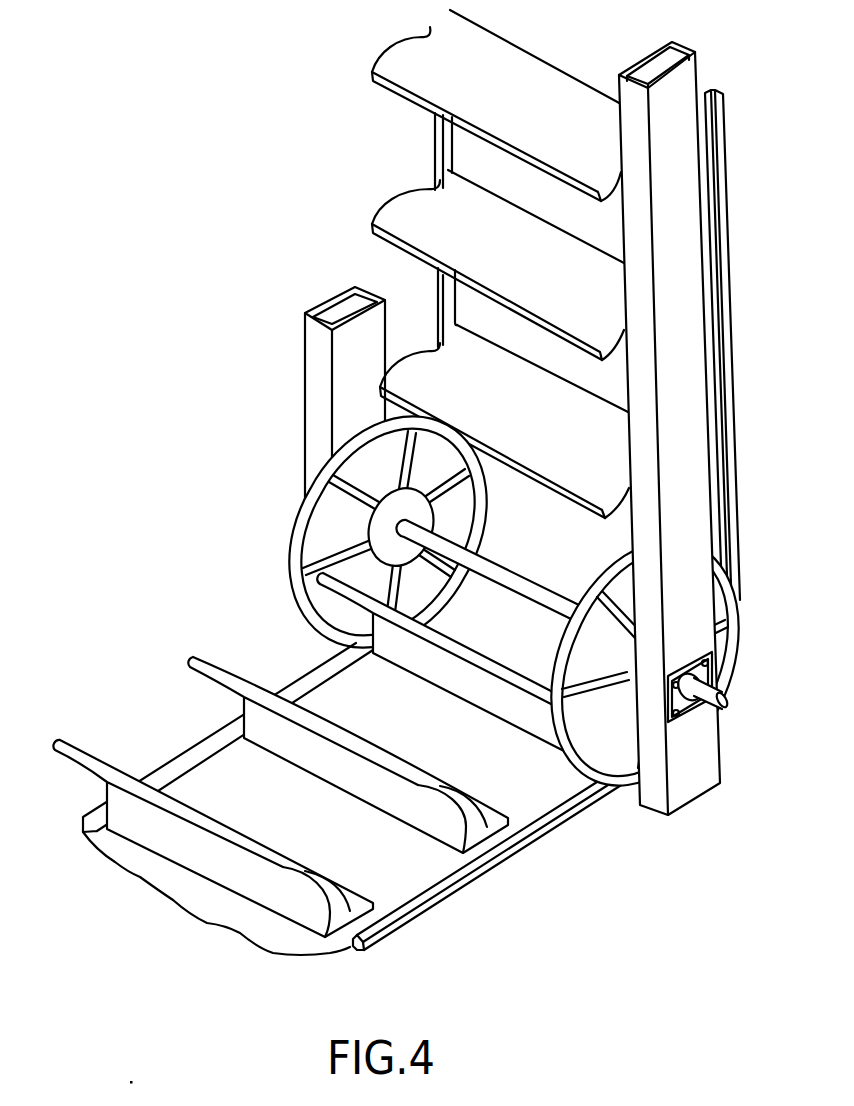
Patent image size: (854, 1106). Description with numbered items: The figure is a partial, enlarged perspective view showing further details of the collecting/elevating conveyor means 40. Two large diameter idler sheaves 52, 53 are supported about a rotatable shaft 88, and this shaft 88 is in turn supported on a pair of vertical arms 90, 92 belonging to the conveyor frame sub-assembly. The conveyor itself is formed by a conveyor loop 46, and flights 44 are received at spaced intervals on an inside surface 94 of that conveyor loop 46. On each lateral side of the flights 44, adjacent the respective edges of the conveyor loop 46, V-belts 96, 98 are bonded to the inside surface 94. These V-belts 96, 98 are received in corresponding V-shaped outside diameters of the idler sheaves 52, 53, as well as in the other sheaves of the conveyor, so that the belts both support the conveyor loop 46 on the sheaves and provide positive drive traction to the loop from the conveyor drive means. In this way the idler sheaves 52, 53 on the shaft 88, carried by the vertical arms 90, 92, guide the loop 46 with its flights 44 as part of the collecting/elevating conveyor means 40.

The collecting/elevating conveyor means 40 is at (489, 898).
The flights 44 is at (428, 673).
The conveyor loop 46 is at (257, 922).
The idler sheave 52 is at (736, 619).
The idler sheave 53 is at (482, 510).
The rotatable shaft 88 is at (722, 704).
The vertical arm 90 is at (663, 418).
The vertical arm 92 is at (312, 415).
The inside surface 94 is at (387, 829).
The V-belt 96 is at (181, 760).
The V-belt 98 is at (733, 437).